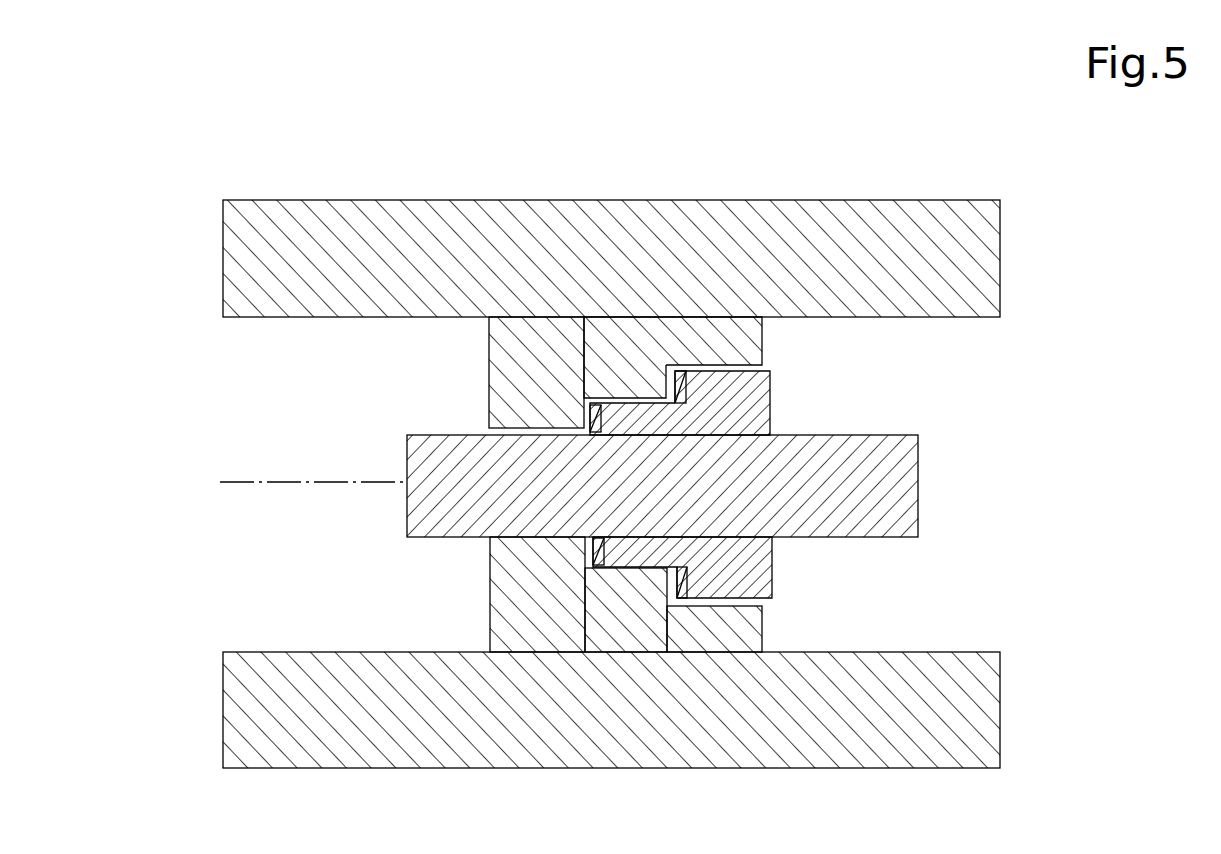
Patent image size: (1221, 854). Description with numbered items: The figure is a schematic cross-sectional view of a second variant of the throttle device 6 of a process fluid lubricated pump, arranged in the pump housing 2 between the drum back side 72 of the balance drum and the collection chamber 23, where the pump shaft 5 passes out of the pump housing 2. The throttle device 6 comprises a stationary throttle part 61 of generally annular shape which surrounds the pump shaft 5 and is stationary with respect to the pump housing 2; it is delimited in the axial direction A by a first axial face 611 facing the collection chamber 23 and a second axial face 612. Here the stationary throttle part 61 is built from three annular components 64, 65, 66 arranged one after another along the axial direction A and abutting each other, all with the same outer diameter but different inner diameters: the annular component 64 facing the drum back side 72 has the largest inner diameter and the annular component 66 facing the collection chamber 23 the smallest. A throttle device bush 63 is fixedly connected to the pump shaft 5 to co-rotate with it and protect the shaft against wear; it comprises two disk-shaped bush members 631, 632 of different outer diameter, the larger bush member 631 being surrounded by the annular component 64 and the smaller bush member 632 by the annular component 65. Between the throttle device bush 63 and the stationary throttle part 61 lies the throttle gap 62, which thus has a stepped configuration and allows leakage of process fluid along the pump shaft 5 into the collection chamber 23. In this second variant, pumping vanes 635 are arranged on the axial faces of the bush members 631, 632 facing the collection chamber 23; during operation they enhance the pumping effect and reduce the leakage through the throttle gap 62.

The pump housing 2 is at (931, 190).
The collection chamber 23 is at (320, 607).
The pump shaft 5 is at (406, 449).
The axial direction A is at (246, 491).
The throttle device 6 is at (635, 289).
The first axial face 611 is at (484, 354).
The second axial face 612 is at (768, 349).
The throttle device bush 63 is at (740, 281).
The bush member 631 is at (727, 368).
The bush member 632 is at (645, 398).
The drum back side 72 is at (990, 418).
The stationary throttle part 61 is at (680, 683).
The annular component 66 is at (510, 613).
The annular component 65 is at (604, 625).
The annular component 64 is at (732, 640).
The throttle gap 62 is at (596, 542).
The pumping vanes 635 is at (592, 567).